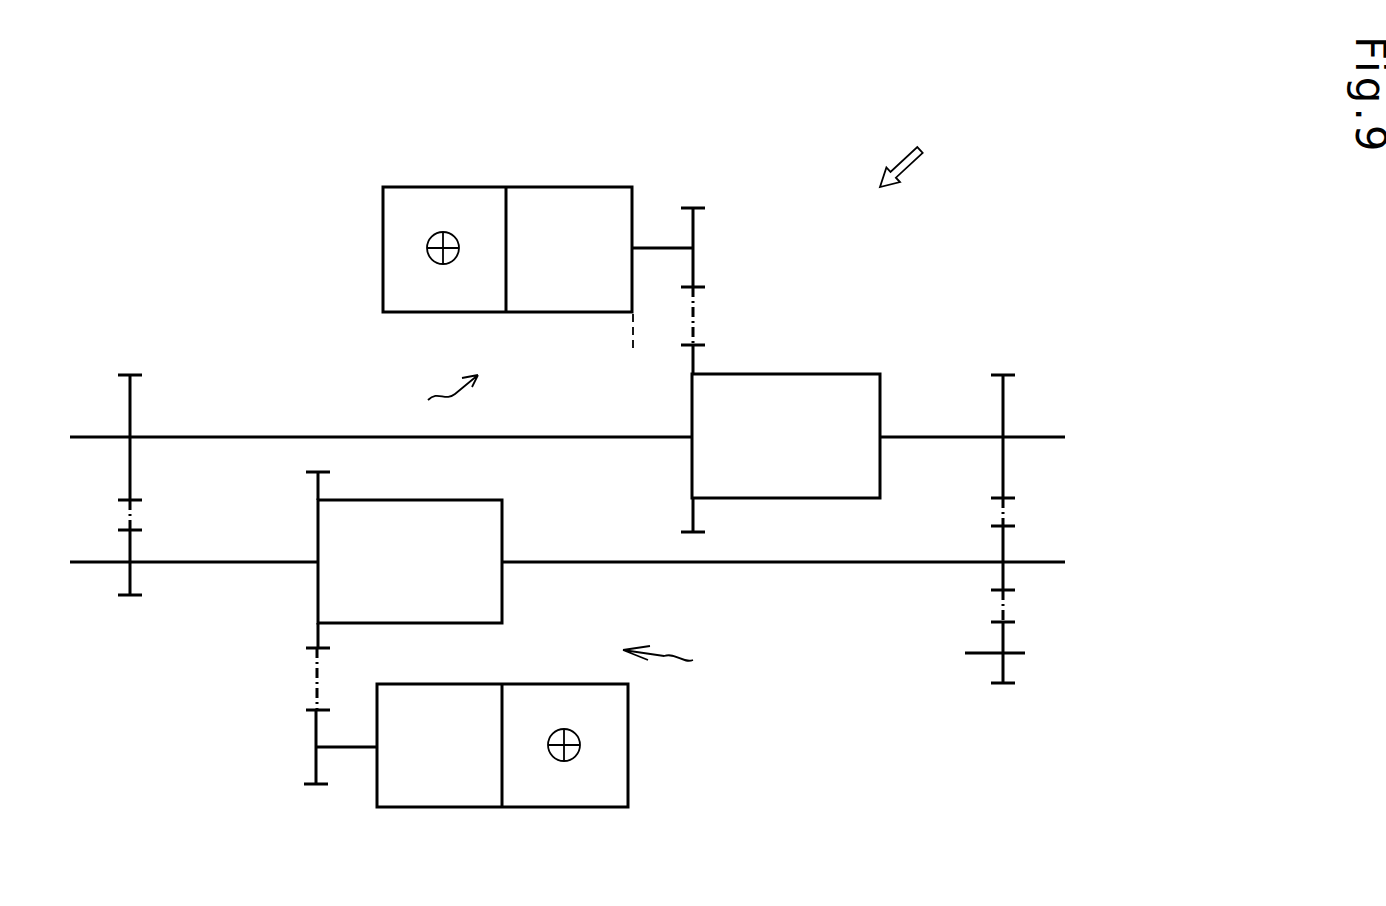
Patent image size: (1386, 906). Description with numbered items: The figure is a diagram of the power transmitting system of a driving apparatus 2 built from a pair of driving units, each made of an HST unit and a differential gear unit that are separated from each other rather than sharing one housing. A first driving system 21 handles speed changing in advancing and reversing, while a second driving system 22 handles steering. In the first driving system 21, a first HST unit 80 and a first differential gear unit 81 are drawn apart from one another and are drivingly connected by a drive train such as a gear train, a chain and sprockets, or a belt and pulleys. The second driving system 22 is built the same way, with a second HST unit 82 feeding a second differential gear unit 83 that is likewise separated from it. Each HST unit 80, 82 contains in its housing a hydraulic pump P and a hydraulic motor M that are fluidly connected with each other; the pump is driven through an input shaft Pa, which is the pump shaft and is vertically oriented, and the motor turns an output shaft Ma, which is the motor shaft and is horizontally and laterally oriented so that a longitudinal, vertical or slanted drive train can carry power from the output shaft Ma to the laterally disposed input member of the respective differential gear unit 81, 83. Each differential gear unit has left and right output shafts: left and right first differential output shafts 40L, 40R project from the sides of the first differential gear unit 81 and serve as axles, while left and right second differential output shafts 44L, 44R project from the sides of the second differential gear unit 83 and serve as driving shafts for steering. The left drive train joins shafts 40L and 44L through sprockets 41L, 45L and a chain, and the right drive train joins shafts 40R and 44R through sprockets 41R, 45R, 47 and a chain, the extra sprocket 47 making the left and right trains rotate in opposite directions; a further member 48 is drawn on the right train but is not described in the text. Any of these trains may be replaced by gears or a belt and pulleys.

The driving apparatus 2 is at (958, 108).
The first driving system 21 is at (431, 382).
The second driving system 22 is at (748, 648).
The first HST unit 80 is at (530, 186).
The first differential gear unit 81 is at (798, 466).
The second HST unit 82 is at (628, 727).
The second differential gear unit 83 is at (403, 628).
The left first differential output shaft 40L is at (608, 437).
The right first differential output shaft 40R is at (946, 436).
The sprocket 41L is at (133, 393).
The sprocket 41R is at (1006, 414).
The left second differential output shaft 44L is at (266, 562).
The right second differential output shaft 44R is at (780, 563).
The sprocket 45L is at (133, 540).
The sprocket 45R is at (1006, 540).
The sprocket 47 is at (1006, 636).
The auxiliary shaft 48 is at (977, 652).
The output shaft Ma is at (657, 246).
The hydraulic motor M is at (580, 272).
The hydraulic pump P is at (490, 238).
The input shaft Pa is at (438, 266).